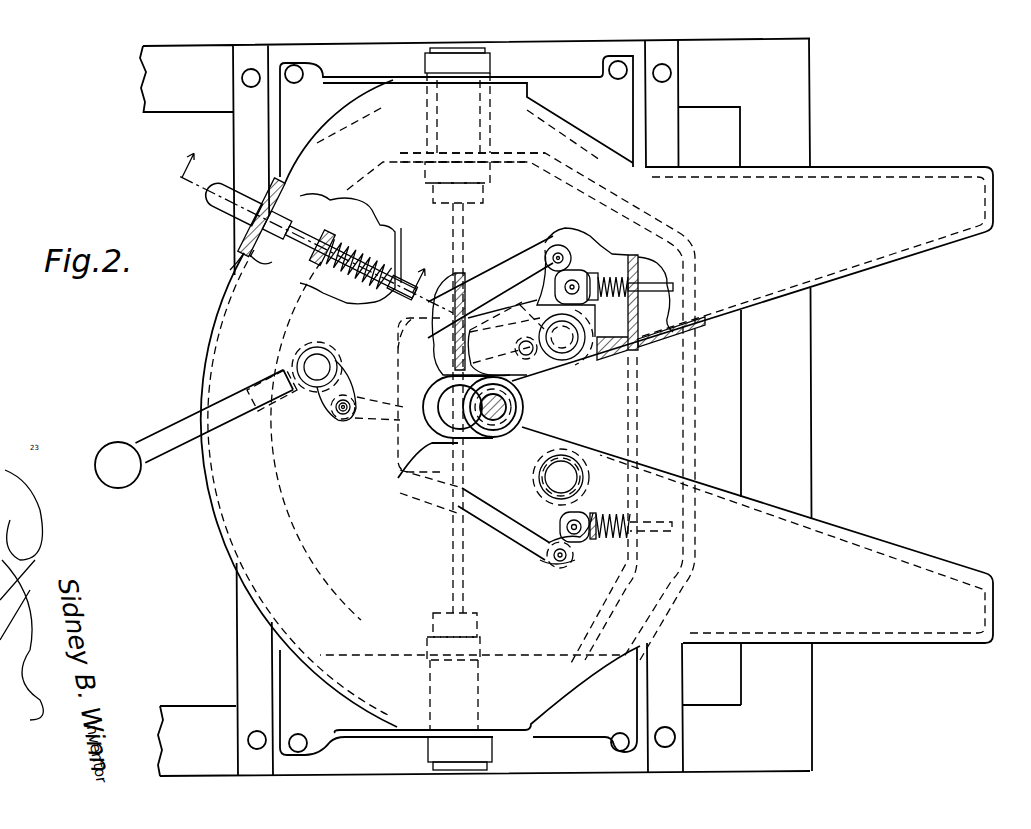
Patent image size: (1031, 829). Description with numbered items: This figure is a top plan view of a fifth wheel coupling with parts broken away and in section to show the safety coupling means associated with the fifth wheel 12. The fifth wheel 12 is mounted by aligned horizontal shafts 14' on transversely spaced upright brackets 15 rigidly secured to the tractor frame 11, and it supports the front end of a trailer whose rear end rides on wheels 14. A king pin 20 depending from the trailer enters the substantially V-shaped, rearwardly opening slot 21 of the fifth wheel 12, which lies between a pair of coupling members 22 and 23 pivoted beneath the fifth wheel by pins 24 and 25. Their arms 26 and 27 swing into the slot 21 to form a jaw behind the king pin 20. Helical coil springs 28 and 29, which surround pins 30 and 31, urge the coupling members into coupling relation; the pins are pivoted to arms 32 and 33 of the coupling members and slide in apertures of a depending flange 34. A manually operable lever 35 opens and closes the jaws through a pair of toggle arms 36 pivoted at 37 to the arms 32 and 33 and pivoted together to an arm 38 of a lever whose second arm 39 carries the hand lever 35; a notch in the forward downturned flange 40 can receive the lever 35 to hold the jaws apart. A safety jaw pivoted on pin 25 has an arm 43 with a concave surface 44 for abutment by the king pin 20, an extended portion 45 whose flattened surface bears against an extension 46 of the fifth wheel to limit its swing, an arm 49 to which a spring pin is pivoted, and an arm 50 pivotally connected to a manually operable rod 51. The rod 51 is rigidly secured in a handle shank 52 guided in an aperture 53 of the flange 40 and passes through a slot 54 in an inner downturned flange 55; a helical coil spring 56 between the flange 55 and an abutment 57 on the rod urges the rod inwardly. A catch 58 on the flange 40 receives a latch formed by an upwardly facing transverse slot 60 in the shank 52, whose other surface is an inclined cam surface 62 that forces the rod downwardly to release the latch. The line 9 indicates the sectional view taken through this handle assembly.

The section line 9- 9 is at (316, 222).
The frame 11 is at (798, 697).
The fifth wheel 12 is at (219, 546).
The wheels 14 is at (459, 486).
The upper pivot bolt 14' is at (472, 125).
The upright brackets 15 is at (378, 740).
The king pin 20 is at (515, 412).
The slot 21 is at (836, 282).
The coupling member 22 is at (567, 445).
The coupling member 23 is at (563, 352).
The pin 24 is at (565, 478).
The pin 25 is at (582, 357).
The arm 26 is at (505, 462).
The arm 27 is at (499, 339).
The helical coil spring 28 is at (607, 540).
The helical coil spring 29 is at (608, 276).
The pin 30 is at (652, 532).
The pin 31 is at (650, 291).
The arm 32 is at (538, 540).
The arm 33 is at (548, 258).
The depending flange 34 is at (650, 336).
The manually operable lever 35 is at (168, 451).
The toggle arms 36 is at (488, 283).
The pivot 37 is at (560, 566).
The arm 38 is at (340, 372).
The second arm 39 is at (286, 390).
The downturned flange 40 is at (212, 362).
The arm 43 is at (532, 375).
The concave surface 44 is at (485, 363).
The extended portion 45 is at (590, 338).
The extension 46 is at (585, 352).
The arm 49 is at (530, 323).
The arm 50 is at (504, 316).
The manually operable rod 51 is at (312, 233).
The handle shank 52 is at (278, 227).
The aperture 53 is at (243, 237).
The slot 54 is at (317, 260).
The downturned fifth wheel flange 55 is at (343, 230).
The helical coil spring 56 is at (357, 278).
The abutment 57 is at (375, 260).
The forwardly and downwardly extending portion 58 is at (250, 194).
The transverse slot 60 is at (257, 253).
The inclined cam surface 62 is at (276, 211).